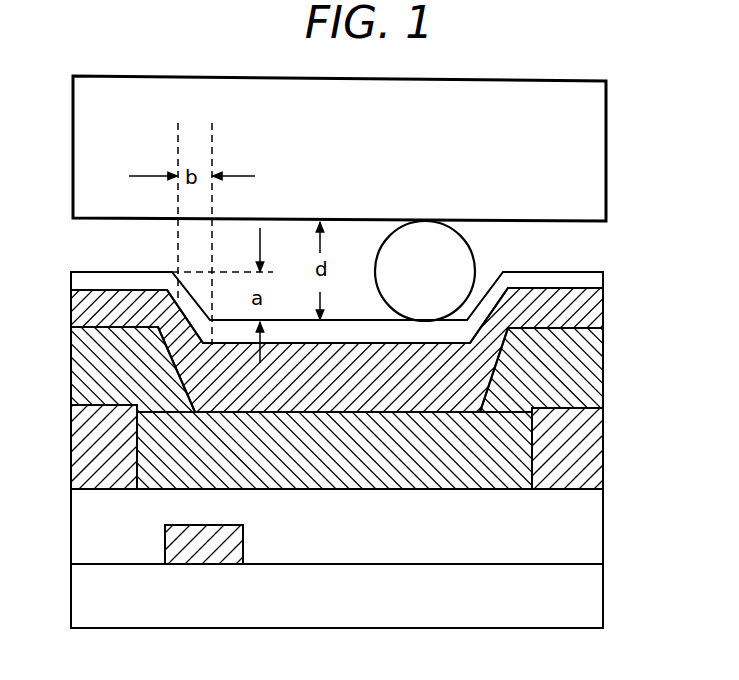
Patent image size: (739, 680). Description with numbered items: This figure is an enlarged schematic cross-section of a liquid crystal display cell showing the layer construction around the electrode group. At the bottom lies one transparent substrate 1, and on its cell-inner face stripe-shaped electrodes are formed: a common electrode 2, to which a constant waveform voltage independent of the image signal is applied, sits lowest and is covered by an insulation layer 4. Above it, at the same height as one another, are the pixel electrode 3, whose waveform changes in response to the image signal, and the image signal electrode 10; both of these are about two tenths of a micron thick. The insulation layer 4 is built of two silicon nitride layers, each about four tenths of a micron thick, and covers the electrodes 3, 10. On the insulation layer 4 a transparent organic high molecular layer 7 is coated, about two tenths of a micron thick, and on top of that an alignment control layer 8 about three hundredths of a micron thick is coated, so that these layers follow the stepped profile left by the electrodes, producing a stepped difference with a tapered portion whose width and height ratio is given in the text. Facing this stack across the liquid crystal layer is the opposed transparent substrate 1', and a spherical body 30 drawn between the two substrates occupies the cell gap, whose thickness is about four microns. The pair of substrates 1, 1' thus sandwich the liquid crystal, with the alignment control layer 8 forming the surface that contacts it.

The transparent substrate 1' is at (369, 148).
The spacer 30 is at (475, 262).
The alignment control layer 8 is at (593, 275).
The transparent organic high molecular layer 7 is at (590, 315).
The insulation layer 4 is at (590, 368).
The pixel electrode 3 is at (590, 452).
The image signal electrode 10 is at (83, 462).
The transparent substrate 1 is at (365, 601).
The common electrode 2 is at (192, 557).